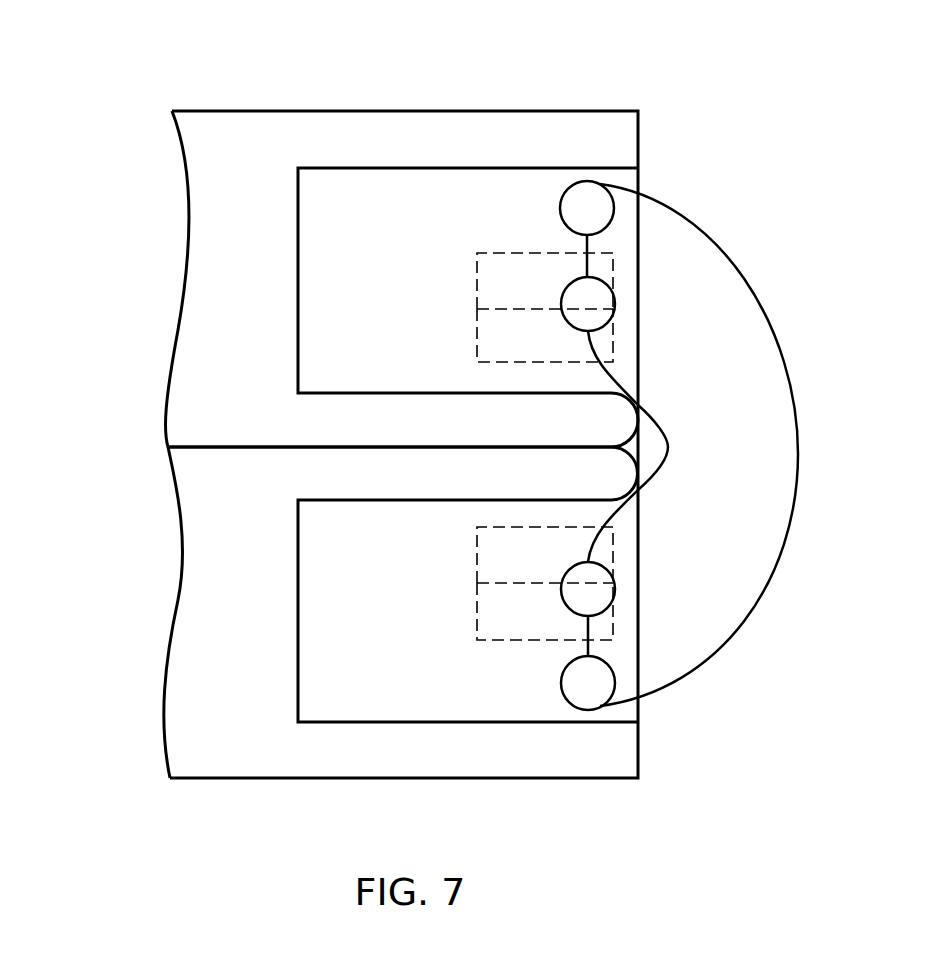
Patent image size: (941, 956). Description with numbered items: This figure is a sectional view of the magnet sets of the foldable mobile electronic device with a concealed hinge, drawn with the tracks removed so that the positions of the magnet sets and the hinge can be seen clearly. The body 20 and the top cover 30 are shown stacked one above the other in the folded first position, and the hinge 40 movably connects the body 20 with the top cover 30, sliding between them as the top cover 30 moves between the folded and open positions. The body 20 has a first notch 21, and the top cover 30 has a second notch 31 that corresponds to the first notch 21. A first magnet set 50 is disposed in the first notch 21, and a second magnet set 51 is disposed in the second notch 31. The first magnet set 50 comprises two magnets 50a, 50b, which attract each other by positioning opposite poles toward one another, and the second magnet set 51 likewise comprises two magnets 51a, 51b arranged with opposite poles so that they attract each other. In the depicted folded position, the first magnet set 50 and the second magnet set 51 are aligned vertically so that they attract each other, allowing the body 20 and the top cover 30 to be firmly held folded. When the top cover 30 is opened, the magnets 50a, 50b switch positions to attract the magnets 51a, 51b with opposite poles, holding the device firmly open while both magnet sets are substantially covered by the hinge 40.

The body 20 is at (235, 742).
The first notch 21 is at (347, 667).
The top cover 30 is at (233, 148).
The second notch 31 is at (345, 235).
The hinge 40 is at (798, 454).
The first magnet set 50 is at (350, 694).
The magnet 50a is at (477, 552).
The magnet 50b is at (477, 612).
The second magnet set 51 is at (350, 193).
The magnet 51a is at (477, 284).
The magnet 51b is at (477, 342).